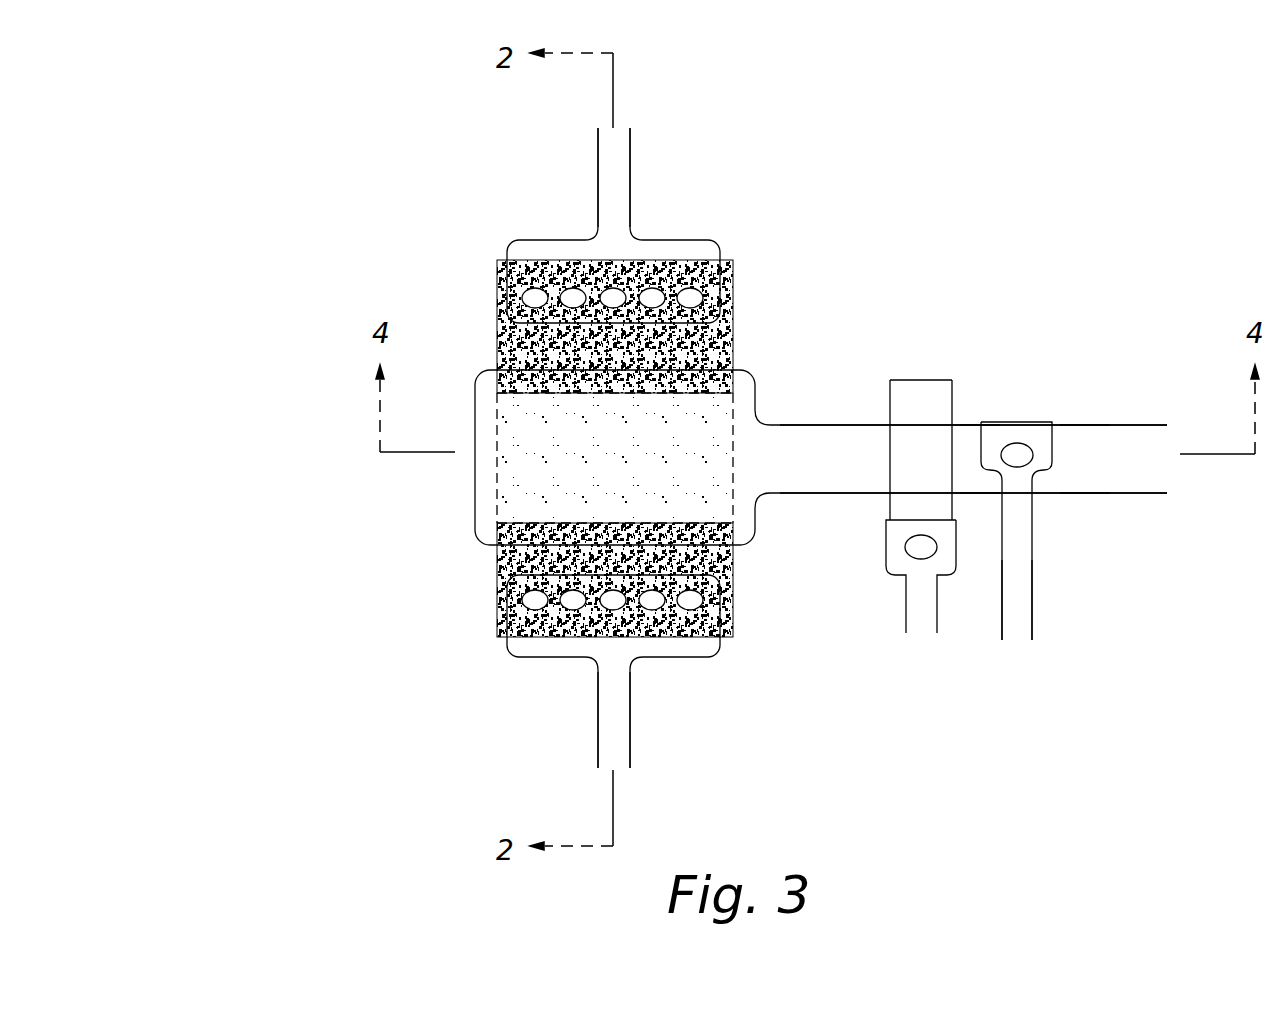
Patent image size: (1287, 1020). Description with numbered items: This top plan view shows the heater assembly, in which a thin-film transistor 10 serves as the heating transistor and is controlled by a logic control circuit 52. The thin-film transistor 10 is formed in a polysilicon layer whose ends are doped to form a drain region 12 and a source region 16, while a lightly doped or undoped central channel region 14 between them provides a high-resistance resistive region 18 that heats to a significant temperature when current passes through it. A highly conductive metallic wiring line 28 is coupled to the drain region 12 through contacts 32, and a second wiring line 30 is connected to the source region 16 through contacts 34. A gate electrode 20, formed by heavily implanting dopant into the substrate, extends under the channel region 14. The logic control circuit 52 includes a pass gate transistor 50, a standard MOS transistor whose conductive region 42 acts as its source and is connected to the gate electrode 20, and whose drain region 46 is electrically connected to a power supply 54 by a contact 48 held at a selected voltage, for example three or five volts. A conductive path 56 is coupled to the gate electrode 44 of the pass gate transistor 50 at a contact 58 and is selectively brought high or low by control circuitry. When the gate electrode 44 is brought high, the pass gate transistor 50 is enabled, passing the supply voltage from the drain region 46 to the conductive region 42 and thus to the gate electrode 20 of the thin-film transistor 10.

The thin-film transistor 10 is at (276, 556).
The drain region 12 is at (497, 335).
The channel region 14 is at (494, 487).
The source region 16 is at (500, 565).
The resistive region 18 is at (510, 472).
The gate electrode 20 is at (485, 422).
The wiring line 28 is at (613, 170).
The wiring line 30 is at (613, 708).
The contact 32 is at (613, 298).
The contact 34 is at (613, 600).
The conductive region 42 is at (803, 470).
The gate electrode 44 is at (907, 468).
The drain region 46 is at (972, 490).
The contact 48 is at (1020, 455).
The pass gate transistor 50 is at (922, 370).
The logic control circuit 52 is at (1052, 382).
The power supply 54 is at (1020, 602).
The conductive path 56 is at (920, 600).
The contact 58 is at (918, 547).